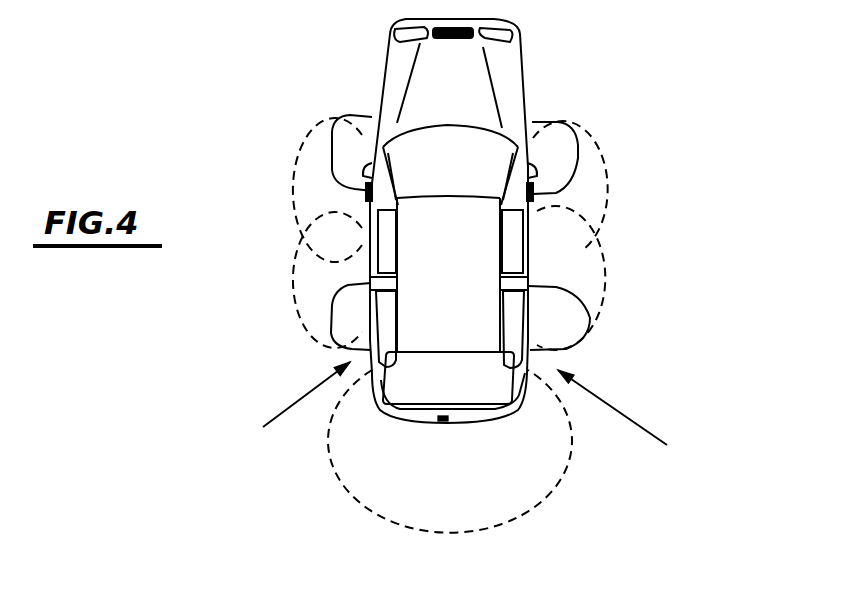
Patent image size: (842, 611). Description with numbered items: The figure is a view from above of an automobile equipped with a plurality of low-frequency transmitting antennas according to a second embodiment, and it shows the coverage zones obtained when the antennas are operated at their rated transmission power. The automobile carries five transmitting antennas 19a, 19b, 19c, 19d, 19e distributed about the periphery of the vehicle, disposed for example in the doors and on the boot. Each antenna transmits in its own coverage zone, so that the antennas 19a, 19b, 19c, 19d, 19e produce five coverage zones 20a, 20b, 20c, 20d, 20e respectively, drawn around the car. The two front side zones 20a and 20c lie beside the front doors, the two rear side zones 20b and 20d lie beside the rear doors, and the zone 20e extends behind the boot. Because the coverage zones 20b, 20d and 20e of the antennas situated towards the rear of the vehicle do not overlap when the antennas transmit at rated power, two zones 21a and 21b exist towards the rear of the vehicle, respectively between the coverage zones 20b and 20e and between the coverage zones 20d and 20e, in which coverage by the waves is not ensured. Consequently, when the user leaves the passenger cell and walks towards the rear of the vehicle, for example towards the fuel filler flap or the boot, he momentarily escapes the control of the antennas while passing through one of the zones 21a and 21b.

The transmitting antenna 19a is at (332, 120).
The transmitting antenna 19b is at (330, 337).
The transmitting antenna 19c is at (583, 134).
The transmitting antenna 19d is at (590, 328).
The transmitting antenna 19e is at (449, 421).
The coverage zone 20a is at (307, 173).
The coverage zone 20b is at (296, 294).
The coverage zone 20c is at (590, 178).
The coverage zone 20d is at (612, 267).
The coverage zone 20e is at (358, 474).
The zone 21a is at (285, 406).
The zone 21b is at (635, 418).